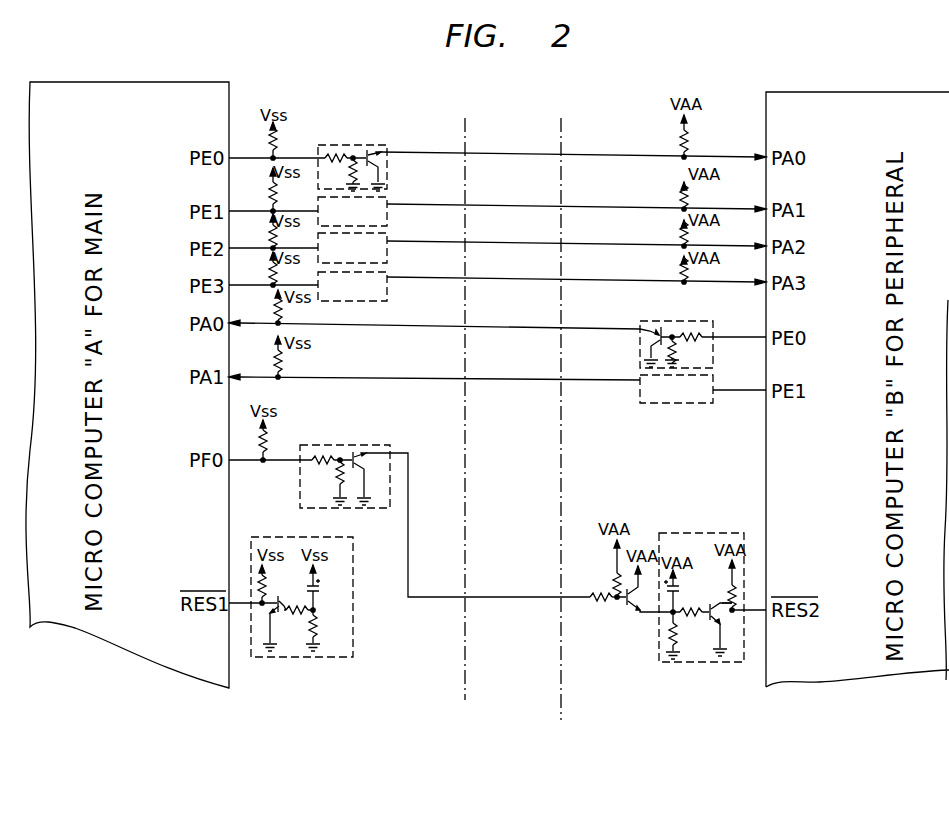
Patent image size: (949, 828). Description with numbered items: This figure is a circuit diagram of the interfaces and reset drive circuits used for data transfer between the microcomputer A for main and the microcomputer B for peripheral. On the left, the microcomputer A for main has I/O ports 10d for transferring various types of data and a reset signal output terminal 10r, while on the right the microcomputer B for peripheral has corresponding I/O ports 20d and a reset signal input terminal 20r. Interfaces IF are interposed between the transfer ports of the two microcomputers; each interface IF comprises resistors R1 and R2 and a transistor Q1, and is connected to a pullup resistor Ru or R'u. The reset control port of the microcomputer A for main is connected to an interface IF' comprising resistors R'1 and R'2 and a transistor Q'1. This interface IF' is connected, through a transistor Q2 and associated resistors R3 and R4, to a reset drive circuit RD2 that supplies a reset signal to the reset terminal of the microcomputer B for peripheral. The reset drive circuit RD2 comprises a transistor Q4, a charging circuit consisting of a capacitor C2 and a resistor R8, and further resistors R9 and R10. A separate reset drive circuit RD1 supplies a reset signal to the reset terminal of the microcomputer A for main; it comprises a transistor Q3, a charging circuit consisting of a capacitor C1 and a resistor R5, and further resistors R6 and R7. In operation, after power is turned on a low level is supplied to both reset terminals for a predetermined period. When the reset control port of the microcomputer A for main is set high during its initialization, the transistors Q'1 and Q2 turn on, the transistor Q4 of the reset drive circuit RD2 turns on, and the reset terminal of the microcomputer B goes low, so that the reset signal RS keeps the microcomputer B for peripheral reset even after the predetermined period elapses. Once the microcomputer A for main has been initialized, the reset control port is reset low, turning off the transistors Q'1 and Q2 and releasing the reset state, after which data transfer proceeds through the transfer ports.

The I/O ports 10d is at (187, 150).
The reset signal output terminal 10r is at (186, 452).
The I/O ports 20d is at (812, 150).
The reset signal input terminal 20r is at (820, 598).
The pullup resistor Ru is at (258, 204).
The pullup resistor R'u is at (464, 247).
The resistor R1 is at (340, 154).
The resistor R2 is at (348, 178).
The transistor Q1 is at (383, 170).
The interface IF is at (533, 257).
The interface IF' is at (345, 460).
The resistor R'1 is at (321, 438).
The resistor R'2 is at (325, 481).
The transistor Q'1 is at (366, 478).
The reset drive circuit RD1 is at (354, 603).
The resistor R7 is at (266, 595).
The resistor R6 is at (298, 600).
The capacitor C1 is at (326, 588).
The transistor Q3 is at (279, 623).
The resistor R5 is at (325, 630).
The resistor R3 is at (600, 594).
The resistor R4 is at (612, 578).
The transistor Q2 is at (642, 602).
The reset drive circuit RD2 is at (695, 663).
The capacitor C2 is at (685, 592).
The resistor R8 is at (668, 636).
The resistor R9 is at (691, 629).
The resistor R10 is at (730, 596).
The transistor Q4 is at (716, 630).
The reset signal RS is at (736, 625).